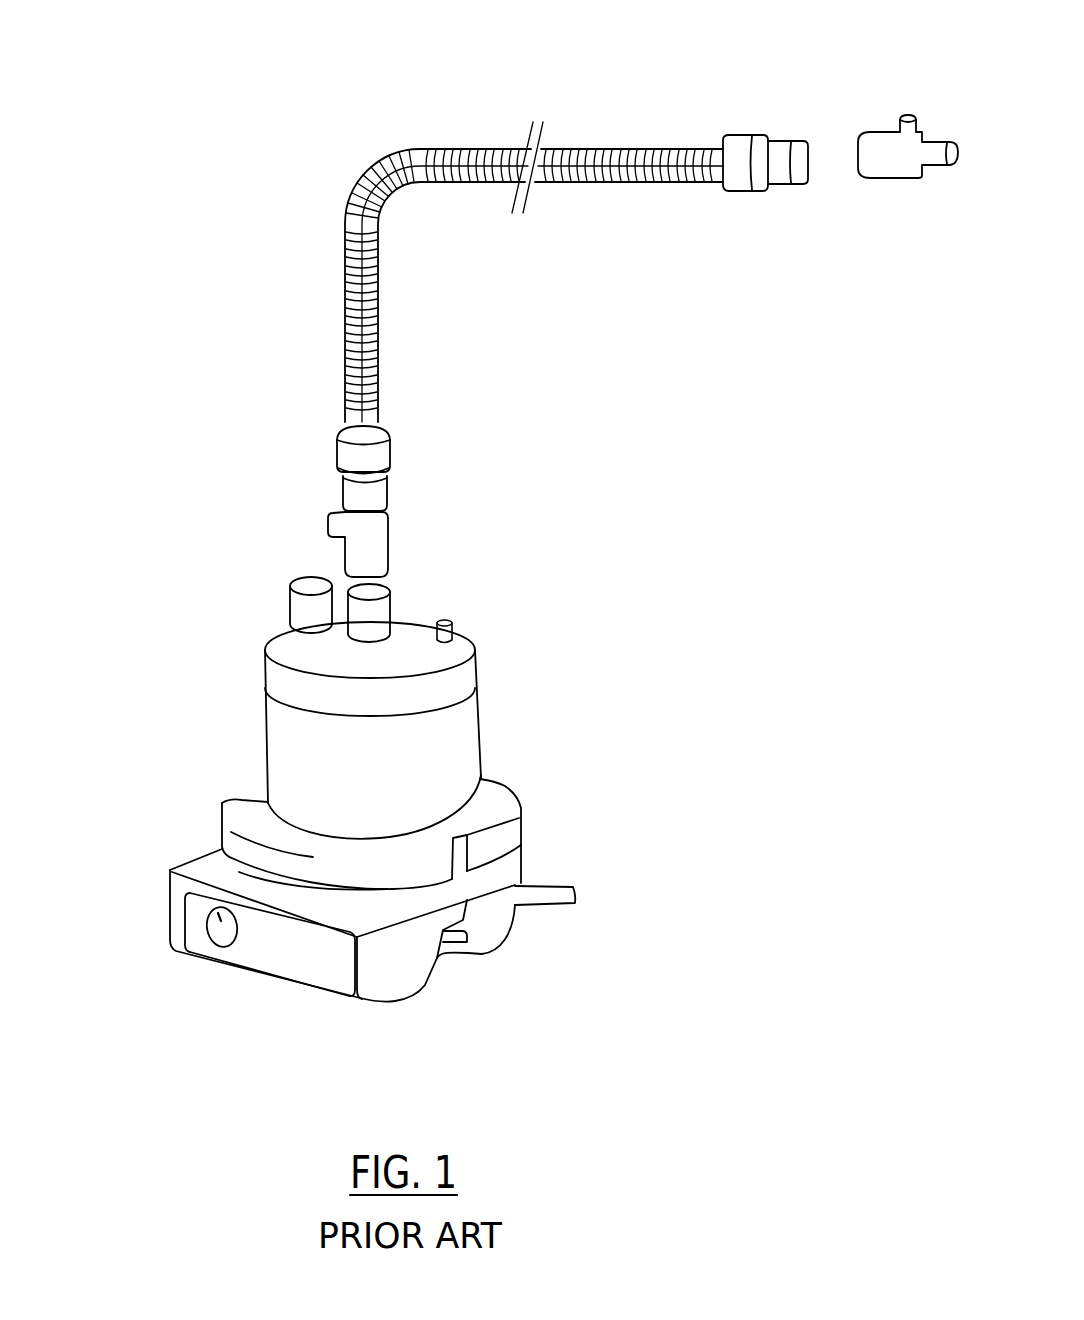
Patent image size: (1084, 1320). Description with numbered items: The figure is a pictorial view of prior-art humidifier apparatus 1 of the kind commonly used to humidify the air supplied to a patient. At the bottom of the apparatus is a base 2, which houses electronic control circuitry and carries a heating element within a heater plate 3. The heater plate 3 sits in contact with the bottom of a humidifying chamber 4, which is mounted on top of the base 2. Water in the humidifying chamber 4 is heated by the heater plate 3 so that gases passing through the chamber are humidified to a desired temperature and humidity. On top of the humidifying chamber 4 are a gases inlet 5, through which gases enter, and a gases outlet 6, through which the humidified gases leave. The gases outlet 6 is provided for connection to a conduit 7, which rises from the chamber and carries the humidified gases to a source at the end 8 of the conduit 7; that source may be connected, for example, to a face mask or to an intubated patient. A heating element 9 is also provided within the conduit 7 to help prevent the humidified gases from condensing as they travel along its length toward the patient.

The humidifier apparatus 1 is at (168, 1055).
The base 2 is at (425, 988).
The heater plate 3 is at (265, 821).
The humidifying chamber 4 is at (480, 739).
The gases inlet 5 is at (290, 603).
The gases outlet 6 is at (387, 603).
The conduit 7 is at (415, 157).
The end 8 is at (947, 135).
The heating element 9 is at (605, 145).